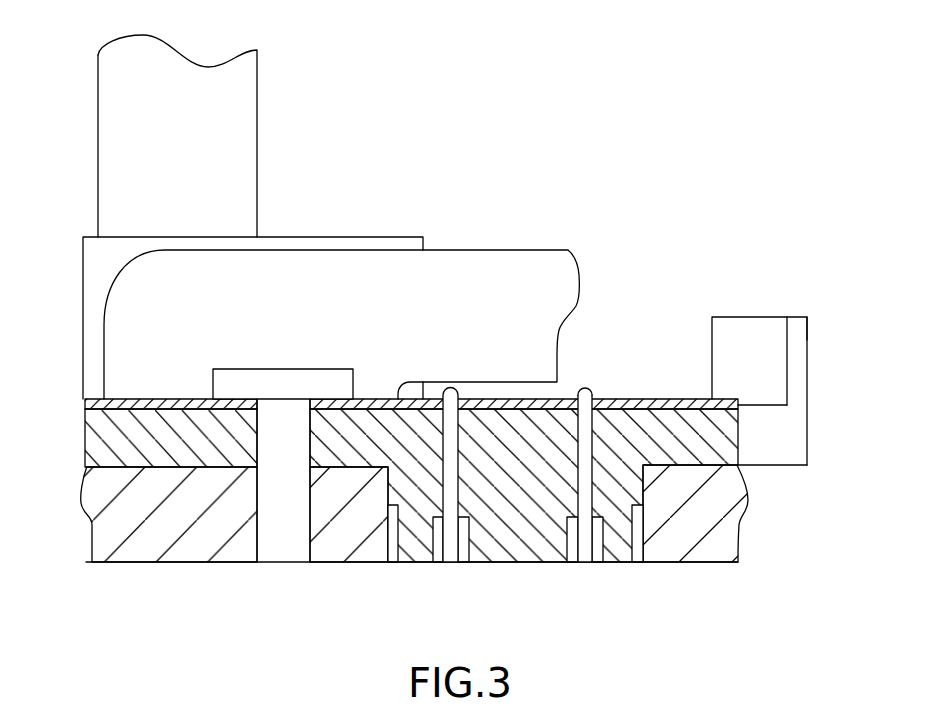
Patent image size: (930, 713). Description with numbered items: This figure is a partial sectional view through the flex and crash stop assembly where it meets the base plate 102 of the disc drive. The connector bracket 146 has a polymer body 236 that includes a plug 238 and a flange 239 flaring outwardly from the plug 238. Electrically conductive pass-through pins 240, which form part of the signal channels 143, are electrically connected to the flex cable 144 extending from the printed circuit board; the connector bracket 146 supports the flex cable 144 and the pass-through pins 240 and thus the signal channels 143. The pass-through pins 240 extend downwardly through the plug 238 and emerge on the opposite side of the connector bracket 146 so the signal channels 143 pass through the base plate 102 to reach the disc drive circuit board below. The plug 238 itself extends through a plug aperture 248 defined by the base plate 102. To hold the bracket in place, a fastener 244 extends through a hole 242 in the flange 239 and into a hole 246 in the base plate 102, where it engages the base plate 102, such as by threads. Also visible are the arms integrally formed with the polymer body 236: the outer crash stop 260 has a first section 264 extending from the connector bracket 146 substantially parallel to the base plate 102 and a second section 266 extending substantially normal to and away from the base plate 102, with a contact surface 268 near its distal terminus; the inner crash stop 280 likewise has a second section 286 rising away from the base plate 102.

The base plate 102 is at (705, 562).
The channels 143 is at (585, 553).
The flex cable 144 is at (526, 250).
The connector bracket 146 is at (85, 443).
The polymer body 236 is at (95, 423).
The plug 238 is at (477, 553).
The flange 239 is at (93, 460).
The pass-through pins 240 is at (583, 395).
The hole 242 is at (284, 420).
The fastener 244 is at (240, 368).
The hole 246 is at (288, 553).
The plug aperture 248 is at (394, 553).
The outer crash stop 260 is at (800, 466).
The first section 264 is at (763, 452).
The second section 266 is at (795, 378).
The contact surface 268 is at (807, 328).
The inner crash stop 280 is at (257, 125).
The second section 286 is at (117, 137).